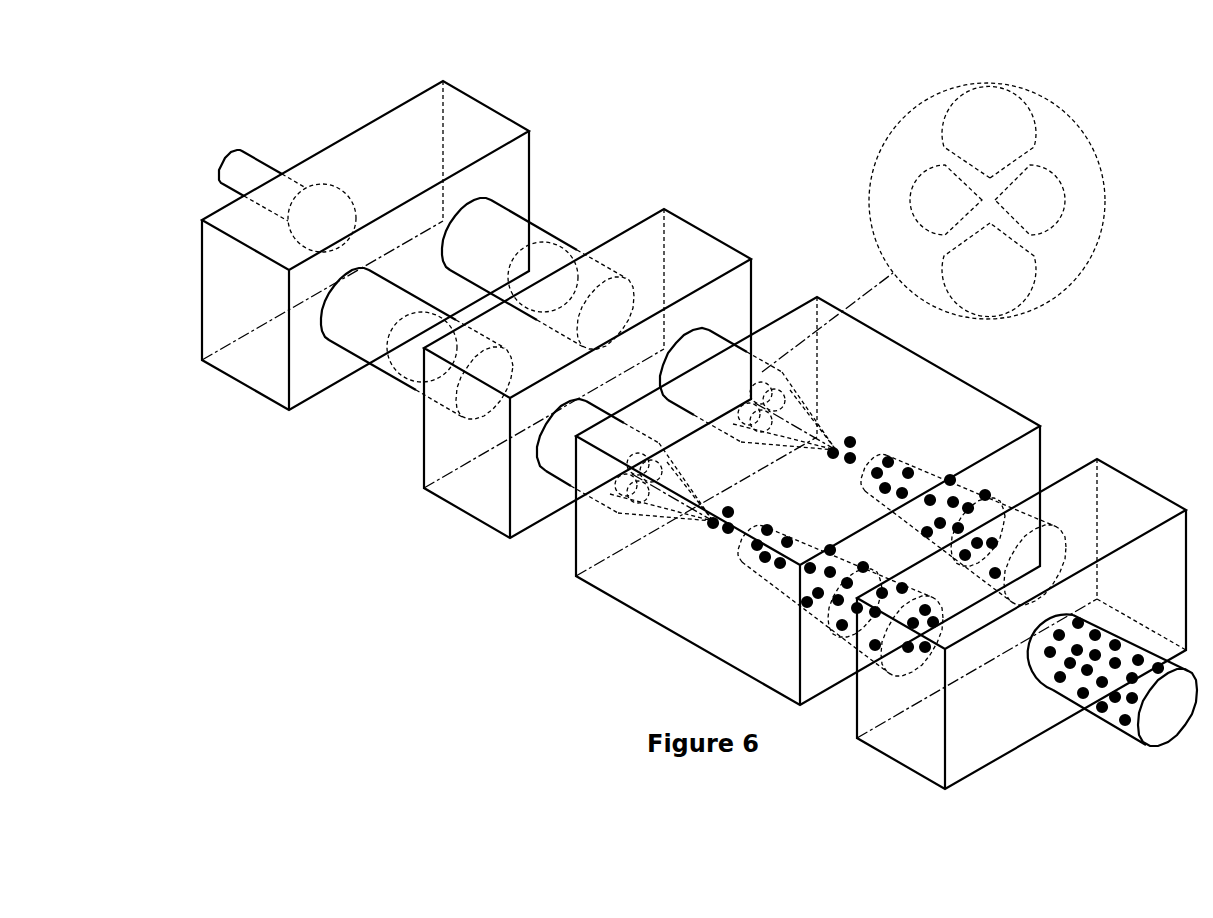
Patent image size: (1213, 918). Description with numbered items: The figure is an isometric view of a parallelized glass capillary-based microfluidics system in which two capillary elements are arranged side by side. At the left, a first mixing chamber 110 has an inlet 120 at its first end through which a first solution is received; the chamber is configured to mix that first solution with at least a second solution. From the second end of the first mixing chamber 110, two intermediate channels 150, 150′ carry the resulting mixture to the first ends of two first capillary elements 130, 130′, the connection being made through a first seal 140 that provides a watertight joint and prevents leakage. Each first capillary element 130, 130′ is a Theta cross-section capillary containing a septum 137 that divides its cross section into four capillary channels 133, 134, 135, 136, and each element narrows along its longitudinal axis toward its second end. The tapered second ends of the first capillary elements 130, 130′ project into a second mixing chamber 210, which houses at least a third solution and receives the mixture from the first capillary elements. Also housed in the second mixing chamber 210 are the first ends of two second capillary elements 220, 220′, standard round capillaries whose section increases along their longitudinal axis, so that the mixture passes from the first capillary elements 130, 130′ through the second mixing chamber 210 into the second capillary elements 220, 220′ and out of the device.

The first mixing chamber 110 is at (253, 364).
The inlet 120 is at (222, 164).
The first capillary element 130 is at (596, 540).
The first capillary element 130′ is at (862, 362).
The capillary channel 133 is at (967, 148).
The capillary channel 134 is at (912, 203).
The capillary channel 135 is at (1068, 196).
The capillary channel 136 is at (1017, 257).
The septum 137 is at (998, 84).
The first seal 140 is at (487, 489).
The intermediate channel 150 is at (400, 378).
The intermediate channel 150′ is at (563, 252).
The second mixing chamber 210 is at (683, 600).
The second capillary element 220 is at (835, 618).
The second capillary element 220′ is at (1033, 492).